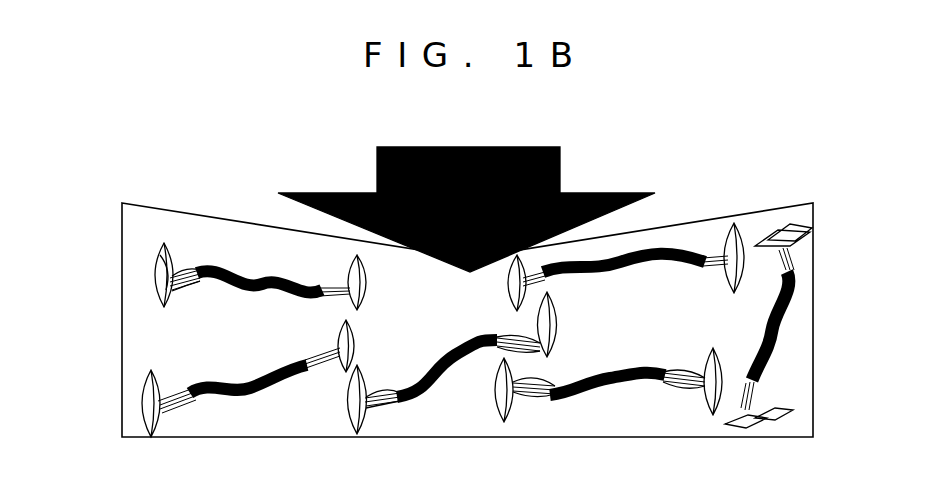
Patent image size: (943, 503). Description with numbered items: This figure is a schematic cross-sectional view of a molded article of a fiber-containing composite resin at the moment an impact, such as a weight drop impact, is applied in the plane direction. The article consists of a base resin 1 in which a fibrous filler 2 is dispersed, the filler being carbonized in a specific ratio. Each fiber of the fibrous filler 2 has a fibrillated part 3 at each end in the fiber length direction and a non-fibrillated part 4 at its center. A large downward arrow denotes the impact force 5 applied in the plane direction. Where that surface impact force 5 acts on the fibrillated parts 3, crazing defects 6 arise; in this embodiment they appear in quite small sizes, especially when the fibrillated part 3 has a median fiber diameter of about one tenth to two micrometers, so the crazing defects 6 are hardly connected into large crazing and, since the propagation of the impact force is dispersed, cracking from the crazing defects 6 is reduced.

The base resin 1 is at (130, 363).
The fibrous filler 2 is at (245, 260).
The fibrillated part 3 is at (188, 268).
The non-fibrillated part 4 is at (277, 268).
The impact force 5 is at (462, 146).
The crazing defects 6 is at (773, 230).